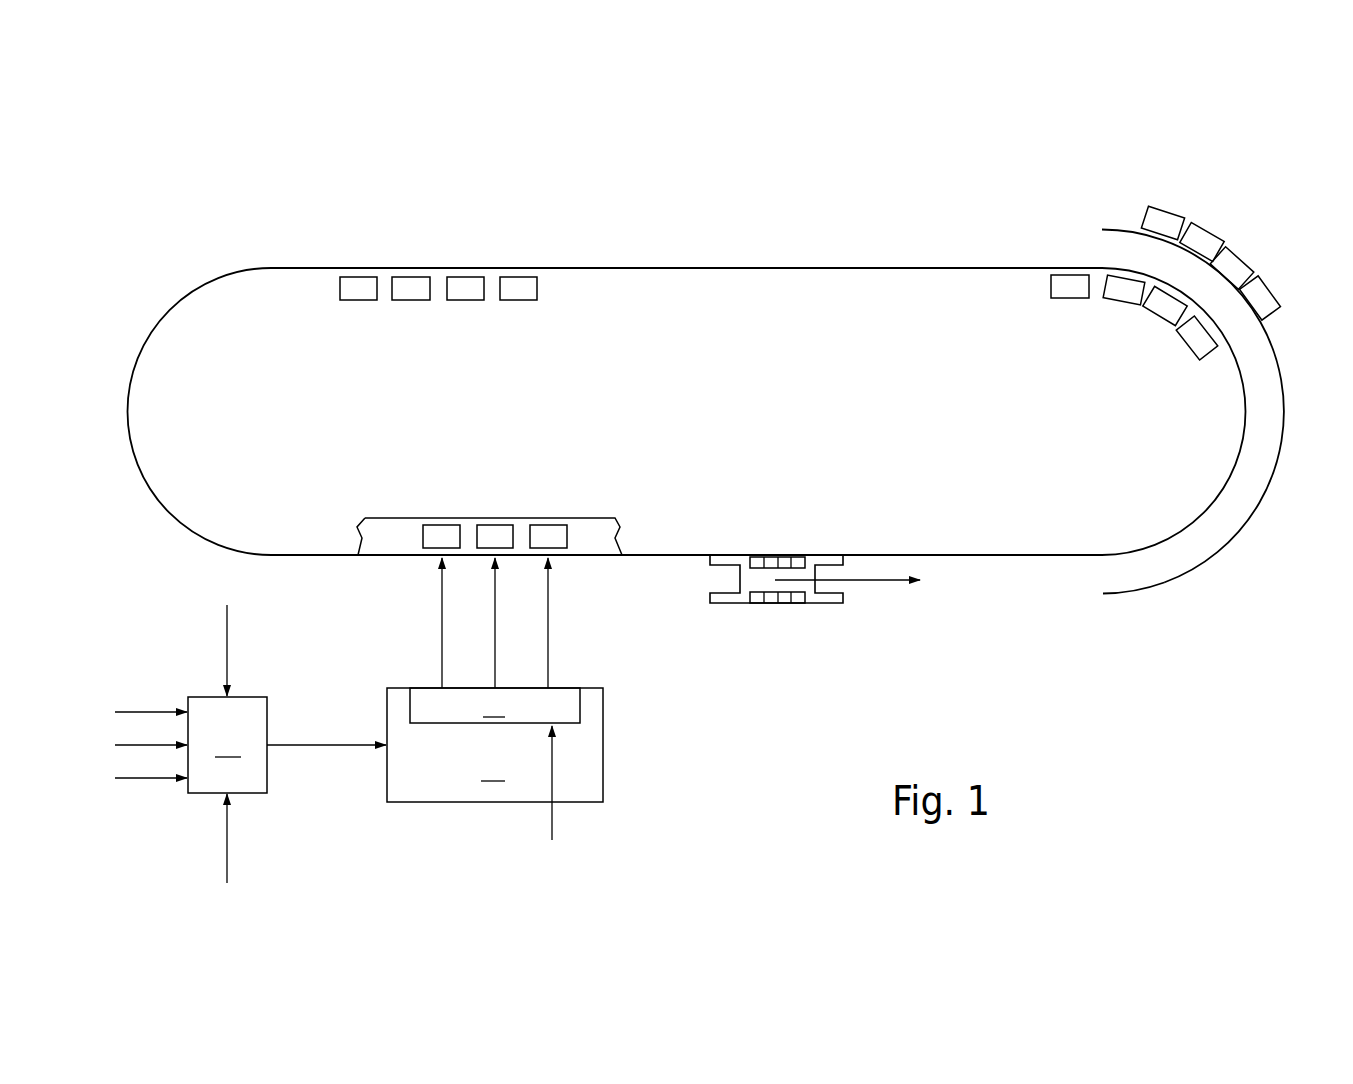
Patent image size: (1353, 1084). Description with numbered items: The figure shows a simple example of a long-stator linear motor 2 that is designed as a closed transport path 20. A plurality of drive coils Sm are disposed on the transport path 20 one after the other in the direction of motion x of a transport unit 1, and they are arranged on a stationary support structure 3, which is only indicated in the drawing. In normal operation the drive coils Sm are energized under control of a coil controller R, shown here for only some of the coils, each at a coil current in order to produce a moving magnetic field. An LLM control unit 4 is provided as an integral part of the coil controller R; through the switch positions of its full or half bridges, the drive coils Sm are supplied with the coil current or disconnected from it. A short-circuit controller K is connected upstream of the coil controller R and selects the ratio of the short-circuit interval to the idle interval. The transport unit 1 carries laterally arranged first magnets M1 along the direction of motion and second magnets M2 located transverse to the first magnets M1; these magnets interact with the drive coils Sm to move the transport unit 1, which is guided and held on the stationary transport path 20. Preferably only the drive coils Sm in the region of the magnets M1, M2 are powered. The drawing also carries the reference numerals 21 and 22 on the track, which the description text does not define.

The transport unit 1 is at (827, 593).
The long-stator linear motor 2 is at (212, 207).
The stationary support structure 3 is at (390, 517).
The LLM control unit 4 is at (495, 640).
The transport path 20 is at (1240, 576).
The inner guide rail 21 is at (988, 551).
The end of outer guide rail 22 is at (1145, 600).
The drive coils Sm is at (410, 300).
The first magnets M1 is at (798, 605).
The second magnets M2 is at (798, 555).
The short-circuit controller K is at (229, 744).
The coil controller R is at (495, 701).